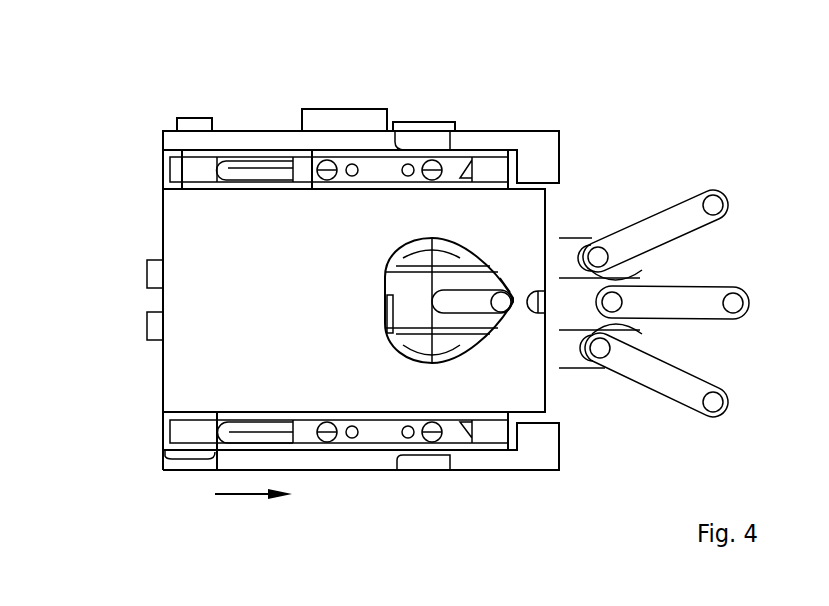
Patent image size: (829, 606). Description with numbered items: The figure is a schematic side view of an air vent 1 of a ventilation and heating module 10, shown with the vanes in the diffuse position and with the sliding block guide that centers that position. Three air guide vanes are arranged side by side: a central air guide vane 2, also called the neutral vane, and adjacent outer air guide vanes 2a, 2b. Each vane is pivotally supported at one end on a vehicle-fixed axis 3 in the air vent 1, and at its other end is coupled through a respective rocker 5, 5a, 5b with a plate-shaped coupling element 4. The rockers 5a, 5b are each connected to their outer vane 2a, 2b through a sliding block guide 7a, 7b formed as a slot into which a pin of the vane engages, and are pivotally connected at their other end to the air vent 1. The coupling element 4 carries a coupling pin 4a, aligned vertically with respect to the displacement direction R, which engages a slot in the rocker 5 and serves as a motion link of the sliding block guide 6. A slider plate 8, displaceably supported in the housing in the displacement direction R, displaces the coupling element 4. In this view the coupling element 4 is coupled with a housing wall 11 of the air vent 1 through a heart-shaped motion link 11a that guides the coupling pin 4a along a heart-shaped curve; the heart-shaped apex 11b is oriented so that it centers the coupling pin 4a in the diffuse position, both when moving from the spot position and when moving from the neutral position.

The ventilation and heating module 10 is at (128, 96).
The air vent 1 is at (259, 122).
The housing wall 11 is at (324, 310).
The heart-shaped motion link 11a is at (395, 262).
The heart-shaped apex 11b is at (500, 292).
The coupling element 4 is at (467, 306).
The coupling pin 4a is at (502, 318).
The sliding block guide 6 is at (478, 286).
The slider plate 8 is at (376, 434).
The rocker 5 is at (582, 311).
The rocker 5a is at (572, 357).
The rocker 5b is at (572, 247).
The sliding block guide 7a is at (592, 358).
The sliding block guide 7b is at (590, 250).
The central air guide vane 2 is at (675, 297).
The outer air guide vane 2a is at (672, 390).
The outer air guide vane 2b is at (683, 212).
The vehicle-fixed axis 3 is at (716, 205).
The displacement direction R is at (241, 497).